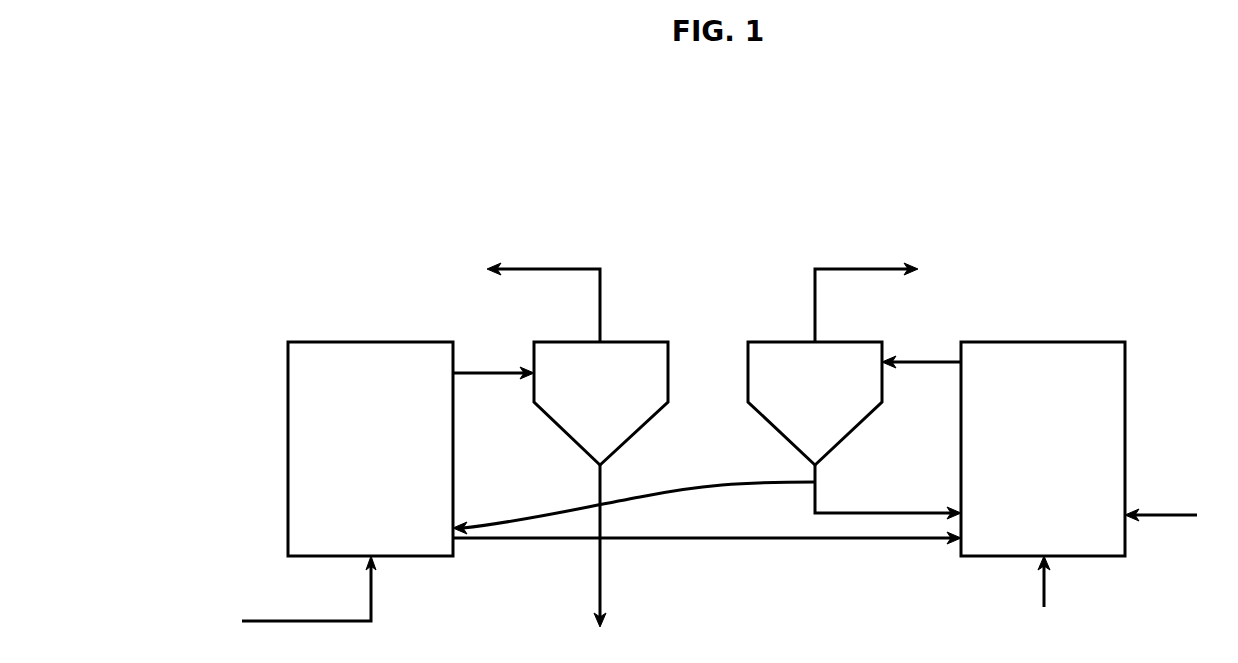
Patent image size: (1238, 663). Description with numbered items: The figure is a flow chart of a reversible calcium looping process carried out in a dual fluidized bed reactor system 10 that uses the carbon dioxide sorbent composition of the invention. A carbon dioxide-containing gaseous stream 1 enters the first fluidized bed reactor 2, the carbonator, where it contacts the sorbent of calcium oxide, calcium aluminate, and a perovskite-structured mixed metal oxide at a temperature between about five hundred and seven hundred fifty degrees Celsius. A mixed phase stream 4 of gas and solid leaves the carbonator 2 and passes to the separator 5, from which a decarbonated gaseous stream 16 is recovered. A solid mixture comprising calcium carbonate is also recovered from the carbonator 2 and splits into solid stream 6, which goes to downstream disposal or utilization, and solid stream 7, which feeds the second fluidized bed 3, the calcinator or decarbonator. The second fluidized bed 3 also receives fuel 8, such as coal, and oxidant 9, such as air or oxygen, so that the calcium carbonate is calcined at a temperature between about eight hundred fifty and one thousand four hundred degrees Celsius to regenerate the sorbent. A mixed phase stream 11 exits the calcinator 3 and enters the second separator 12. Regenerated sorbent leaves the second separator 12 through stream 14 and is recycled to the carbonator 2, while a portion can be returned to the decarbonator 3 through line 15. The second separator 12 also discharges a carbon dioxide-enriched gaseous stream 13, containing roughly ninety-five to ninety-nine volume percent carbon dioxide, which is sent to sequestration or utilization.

The carbon dioxide-containing gaseous stream 1 is at (309, 607).
The first fluidized bed reactor 2 is at (287, 420).
The second fluidized bed 3 is at (1055, 338).
The mixed phase stream 4 is at (513, 370).
The separator 5 is at (622, 339).
The solid stream 6 is at (597, 573).
The solid stream 7 is at (725, 543).
The fuel 8 is at (1170, 515).
The oxidant 9 is at (1035, 590).
The dual fluidized bed reactor system 10 is at (722, 245).
The mixed phase stream 11 is at (922, 357).
The second separator 12 is at (797, 339).
The carbon dioxide-enriched gaseous stream 13 is at (852, 265).
The stream 14 is at (660, 483).
The line 15 is at (833, 512).
The decarbonated gaseous stream 16 is at (545, 270).